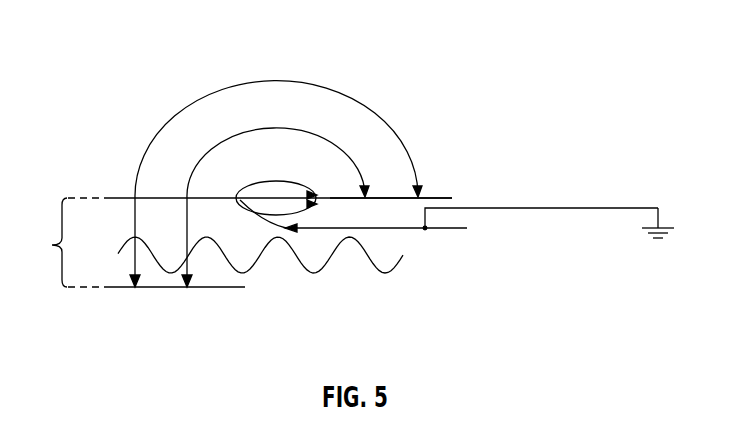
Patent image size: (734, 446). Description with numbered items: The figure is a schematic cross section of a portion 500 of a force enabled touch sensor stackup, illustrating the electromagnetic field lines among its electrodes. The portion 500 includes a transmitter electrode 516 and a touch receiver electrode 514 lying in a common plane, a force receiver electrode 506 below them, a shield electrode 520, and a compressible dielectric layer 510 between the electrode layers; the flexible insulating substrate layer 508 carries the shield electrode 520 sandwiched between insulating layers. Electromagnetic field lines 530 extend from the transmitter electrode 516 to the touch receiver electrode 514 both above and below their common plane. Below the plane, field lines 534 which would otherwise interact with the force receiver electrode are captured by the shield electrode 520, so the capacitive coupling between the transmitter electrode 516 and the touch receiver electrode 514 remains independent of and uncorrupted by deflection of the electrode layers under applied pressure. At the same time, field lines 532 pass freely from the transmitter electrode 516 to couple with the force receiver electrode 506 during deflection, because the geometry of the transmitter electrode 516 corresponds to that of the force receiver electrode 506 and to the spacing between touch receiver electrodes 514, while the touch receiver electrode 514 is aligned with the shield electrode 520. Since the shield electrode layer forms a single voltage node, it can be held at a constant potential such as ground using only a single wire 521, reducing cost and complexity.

The portion of the stackup 500 is at (106, 59).
The electromagnetic field lines 530 is at (277, 83).
The transmitter electrode 516 is at (113, 197).
The touch receiver electrode 514 is at (444, 198).
The force receiver electrode 506 is at (220, 287).
The substrate layer 508 is at (41, 242).
The field lines 532 is at (140, 272).
The field lines 534 is at (221, 199).
The compressible dielectric layer 510 is at (385, 273).
The shield electrode 520 is at (467, 228).
The single wire 521 is at (658, 208).